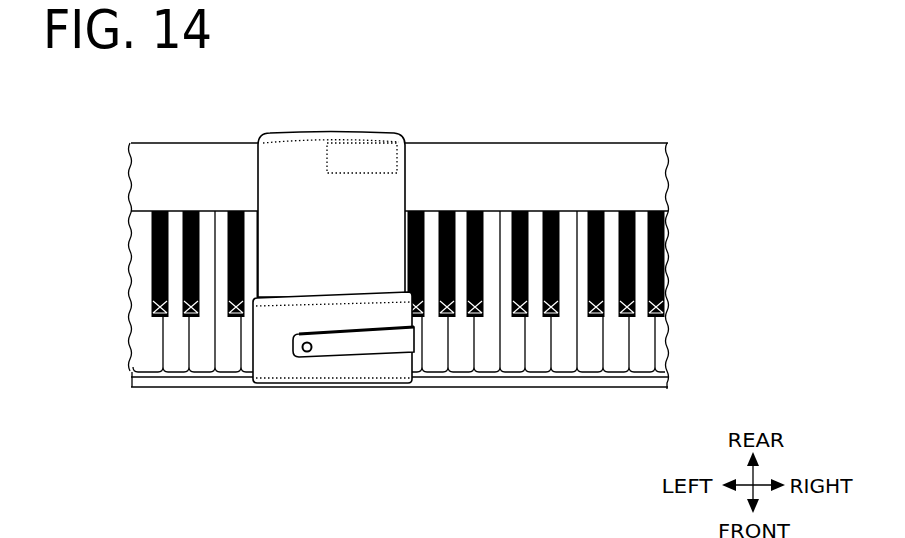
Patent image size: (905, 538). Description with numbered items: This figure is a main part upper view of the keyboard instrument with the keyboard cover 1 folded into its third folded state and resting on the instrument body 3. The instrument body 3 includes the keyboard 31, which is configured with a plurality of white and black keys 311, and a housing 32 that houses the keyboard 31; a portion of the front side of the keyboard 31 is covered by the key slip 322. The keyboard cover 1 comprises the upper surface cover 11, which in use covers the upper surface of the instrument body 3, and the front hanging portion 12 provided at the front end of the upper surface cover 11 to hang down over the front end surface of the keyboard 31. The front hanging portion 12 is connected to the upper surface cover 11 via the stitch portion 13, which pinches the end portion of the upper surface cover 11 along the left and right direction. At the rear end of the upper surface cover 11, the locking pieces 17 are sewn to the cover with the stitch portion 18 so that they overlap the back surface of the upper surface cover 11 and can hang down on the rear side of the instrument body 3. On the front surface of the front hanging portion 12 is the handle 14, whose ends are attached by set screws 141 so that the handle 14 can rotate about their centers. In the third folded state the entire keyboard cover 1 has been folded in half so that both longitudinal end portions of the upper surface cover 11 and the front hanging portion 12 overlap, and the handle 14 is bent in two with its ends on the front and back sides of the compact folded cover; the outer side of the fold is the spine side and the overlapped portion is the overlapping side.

The keyboard cover 1 is at (250, 120).
The upper surface cover 11 is at (280, 155).
The front hanging portion 12 is at (272, 363).
The stitch portion 13 is at (380, 378).
The handle 14 is at (345, 347).
The set screw 141 is at (308, 352).
The locking piece 17 is at (343, 141).
The stitch portion 18 is at (382, 140).
The instrument body 3 is at (627, 93).
The keyboard 31 is at (651, 192).
The keys 311 is at (198, 352).
The housing 32 is at (625, 131).
The key slip 322 is at (648, 383).